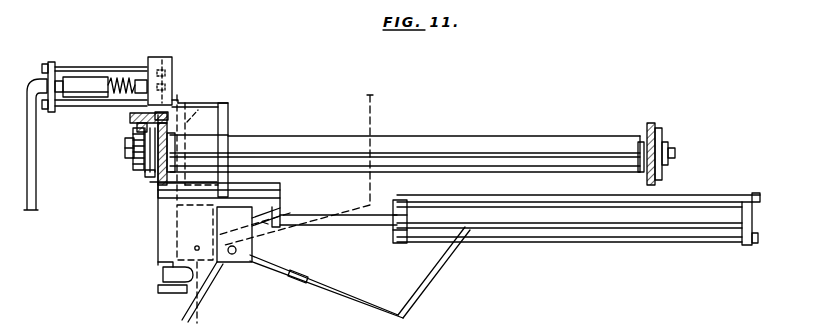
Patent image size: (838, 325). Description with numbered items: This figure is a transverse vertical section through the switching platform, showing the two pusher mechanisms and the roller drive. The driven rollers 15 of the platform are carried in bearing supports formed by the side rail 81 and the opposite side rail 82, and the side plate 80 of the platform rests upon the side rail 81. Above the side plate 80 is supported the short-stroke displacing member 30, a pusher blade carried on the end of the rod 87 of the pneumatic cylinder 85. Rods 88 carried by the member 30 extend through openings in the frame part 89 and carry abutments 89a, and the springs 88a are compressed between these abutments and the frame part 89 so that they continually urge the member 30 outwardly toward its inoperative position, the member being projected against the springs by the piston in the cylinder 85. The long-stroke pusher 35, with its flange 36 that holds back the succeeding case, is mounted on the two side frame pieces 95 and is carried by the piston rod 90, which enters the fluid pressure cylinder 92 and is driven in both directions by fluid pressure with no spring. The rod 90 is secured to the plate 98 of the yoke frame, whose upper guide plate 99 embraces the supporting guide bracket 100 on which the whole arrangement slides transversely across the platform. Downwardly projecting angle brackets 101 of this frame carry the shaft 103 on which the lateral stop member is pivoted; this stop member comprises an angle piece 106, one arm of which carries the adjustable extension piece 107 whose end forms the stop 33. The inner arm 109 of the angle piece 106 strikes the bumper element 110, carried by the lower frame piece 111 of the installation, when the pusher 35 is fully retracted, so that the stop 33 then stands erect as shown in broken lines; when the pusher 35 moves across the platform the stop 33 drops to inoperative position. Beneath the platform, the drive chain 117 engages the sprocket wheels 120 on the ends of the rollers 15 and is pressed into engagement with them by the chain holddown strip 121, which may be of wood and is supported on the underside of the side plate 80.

The driven roller 15 is at (499, 143).
The displacing member 30 is at (174, 70).
The retainer member 33 is at (373, 125).
The pusher member 35 is at (230, 112).
The flange 36 is at (192, 99).
The side plate 80 is at (130, 117).
The side rail 81 is at (153, 178).
The side rail 82 is at (651, 121).
The pneumatic cylinder 85 is at (112, 74).
The rod 87 is at (162, 72).
The rod 88 is at (126, 88).
The spring 88a is at (127, 92).
The frame part 89 is at (152, 56).
The abutment 89a is at (71, 76).
The piston rod 90 is at (354, 222).
The fluid pressure cylinder 92 is at (608, 224).
The side frame piece 95 is at (225, 152).
The plate 98 is at (234, 234).
The upper guide plate 99 is at (293, 190).
The supporting guide bracket 100 is at (314, 201).
The angle bracket 101 is at (272, 240).
The shaft 103 is at (236, 254).
The angle piece 106 is at (300, 280).
The adjustable extension piece 107 is at (420, 290).
The inner arm 109 is at (203, 300).
The bumper element 110 is at (180, 283).
The lower frame piece 111 is at (157, 275).
The drive chain 117 is at (130, 139).
The sprocket wheel 120 is at (140, 170).
The chain holddown strip 121 is at (130, 130).